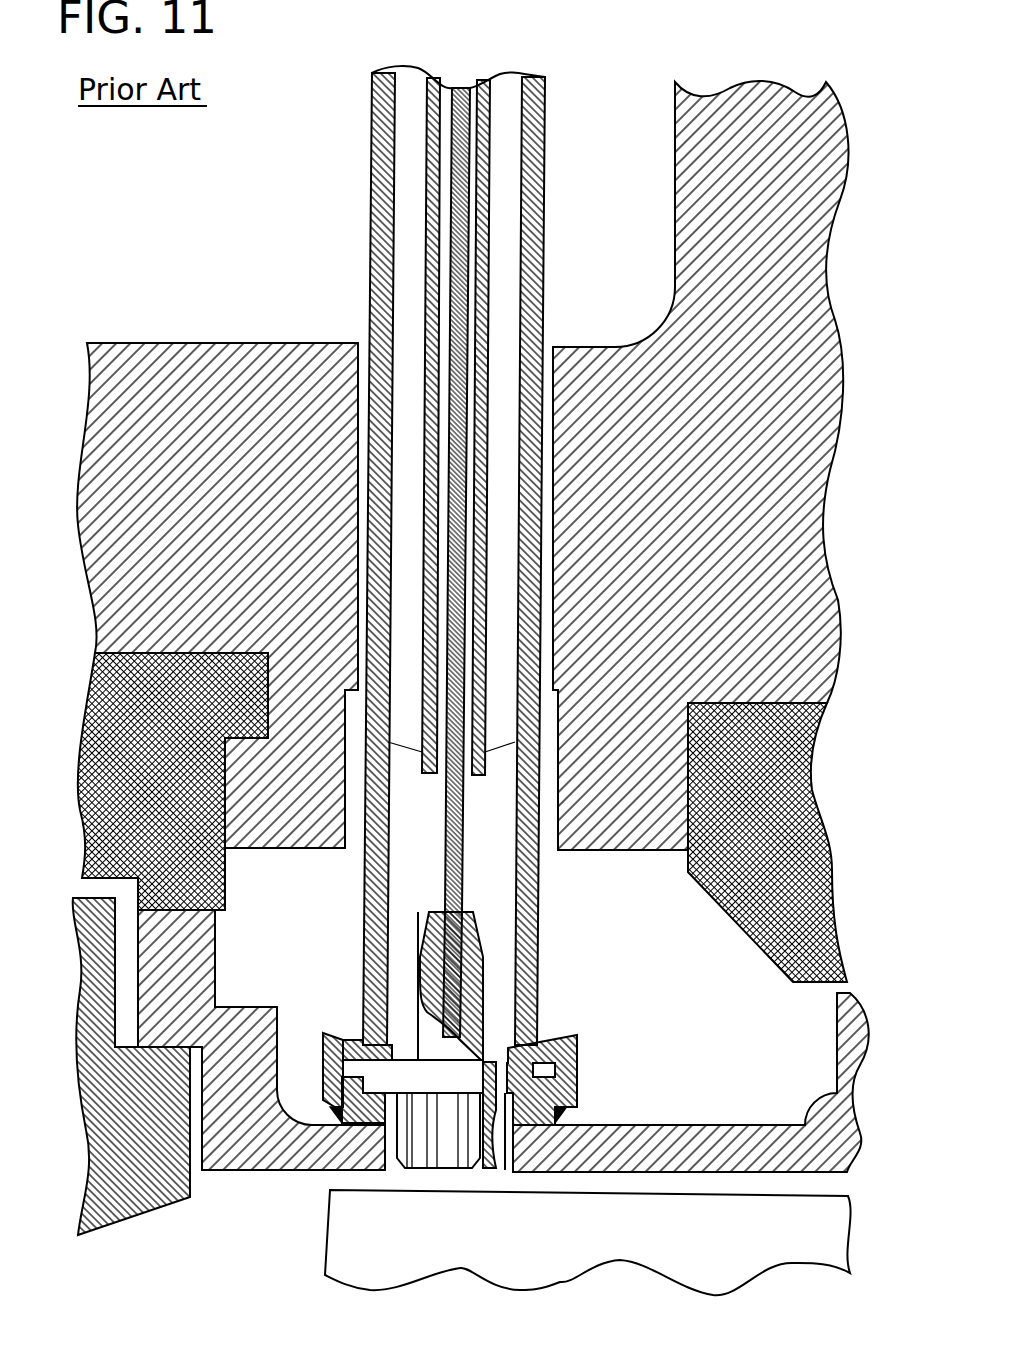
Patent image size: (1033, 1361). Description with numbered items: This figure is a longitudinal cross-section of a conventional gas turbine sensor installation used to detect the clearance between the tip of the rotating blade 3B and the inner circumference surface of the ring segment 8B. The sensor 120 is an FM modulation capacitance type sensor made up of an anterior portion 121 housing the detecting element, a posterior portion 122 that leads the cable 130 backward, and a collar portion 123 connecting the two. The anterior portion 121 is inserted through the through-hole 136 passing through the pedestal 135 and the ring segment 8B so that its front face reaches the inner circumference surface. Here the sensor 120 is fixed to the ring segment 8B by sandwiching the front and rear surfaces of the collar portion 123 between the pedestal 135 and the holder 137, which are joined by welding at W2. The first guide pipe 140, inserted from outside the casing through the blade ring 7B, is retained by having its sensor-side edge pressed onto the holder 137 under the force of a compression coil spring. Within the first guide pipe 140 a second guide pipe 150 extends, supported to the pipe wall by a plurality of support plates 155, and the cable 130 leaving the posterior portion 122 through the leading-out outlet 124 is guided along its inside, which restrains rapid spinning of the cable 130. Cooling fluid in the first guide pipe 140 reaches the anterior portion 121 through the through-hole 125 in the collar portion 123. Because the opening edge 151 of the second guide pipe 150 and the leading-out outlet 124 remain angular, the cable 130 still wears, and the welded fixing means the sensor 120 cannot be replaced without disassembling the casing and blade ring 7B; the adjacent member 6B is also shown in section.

The blade ring 7B is at (215, 342).
The first guide pipe 140 is at (545, 172).
The second guide pipe 150 is at (490, 235).
The support plates 155 is at (513, 272).
The opening edge 151 is at (437, 774).
The cable 130 is at (468, 850).
The leading-out outlet 124 is at (440, 910).
The posterior portion 122 is at (427, 1012).
The collar portion 123 is at (347, 1032).
The through-hole 125 is at (500, 1068).
The holder 137 is at (577, 1057).
The pedestal 135 is at (577, 1087).
The weld W2 is at (565, 1113).
The side plate 6B is at (115, 1213).
The ring segment 8B is at (268, 1158).
The rotating blade 3B is at (333, 1257).
The sensor 120 is at (420, 1178).
The anterior portion 121 is at (447, 1145).
The through-hole 136 is at (507, 1150).